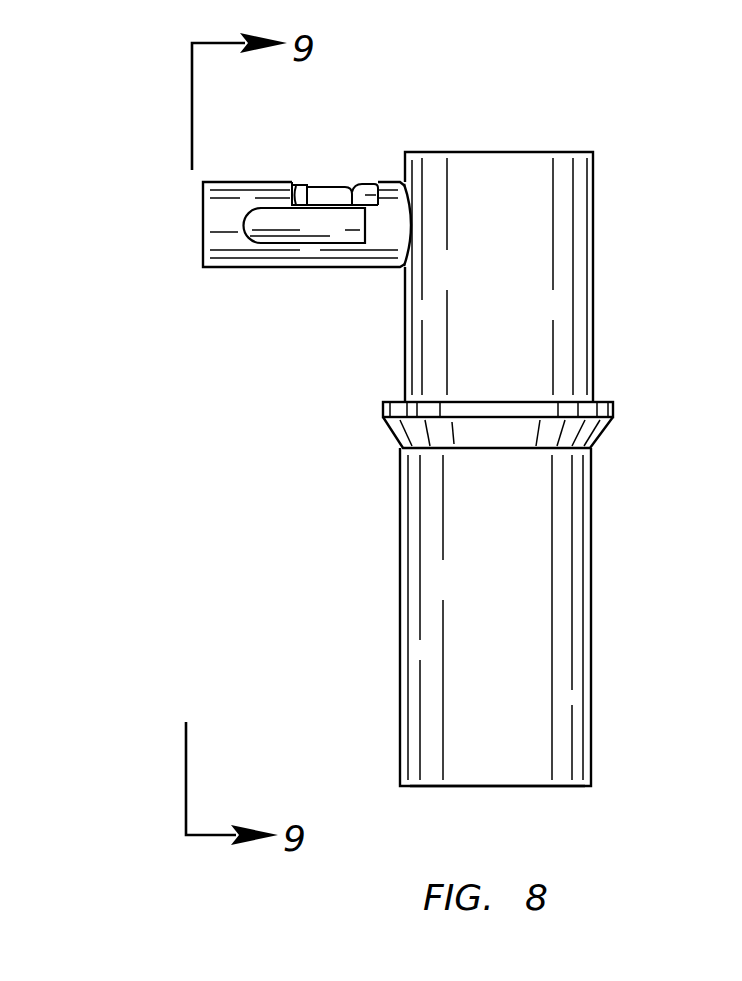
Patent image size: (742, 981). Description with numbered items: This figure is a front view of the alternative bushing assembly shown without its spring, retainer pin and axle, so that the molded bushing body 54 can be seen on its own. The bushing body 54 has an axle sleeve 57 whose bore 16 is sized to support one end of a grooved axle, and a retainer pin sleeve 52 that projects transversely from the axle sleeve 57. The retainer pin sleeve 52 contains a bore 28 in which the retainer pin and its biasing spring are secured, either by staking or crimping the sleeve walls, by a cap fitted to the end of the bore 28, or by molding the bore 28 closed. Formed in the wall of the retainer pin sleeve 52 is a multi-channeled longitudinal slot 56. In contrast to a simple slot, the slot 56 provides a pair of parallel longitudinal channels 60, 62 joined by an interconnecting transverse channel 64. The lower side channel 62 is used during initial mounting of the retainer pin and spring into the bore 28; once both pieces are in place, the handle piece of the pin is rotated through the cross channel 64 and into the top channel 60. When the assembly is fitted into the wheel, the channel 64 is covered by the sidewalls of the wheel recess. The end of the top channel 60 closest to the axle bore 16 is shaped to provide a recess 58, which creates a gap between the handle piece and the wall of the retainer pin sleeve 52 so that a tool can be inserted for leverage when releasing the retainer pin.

The bore 16 is at (548, 786).
The bore 28 is at (275, 225).
The retainer pin sleeve 52 is at (203, 207).
The bushing body 54 is at (606, 286).
The slot 56 is at (360, 184).
The axle sleeve 57 is at (592, 543).
The recess 58 is at (369, 190).
The channel 60 is at (319, 190).
The channel 62 is at (329, 227).
The channel 64 is at (302, 185).